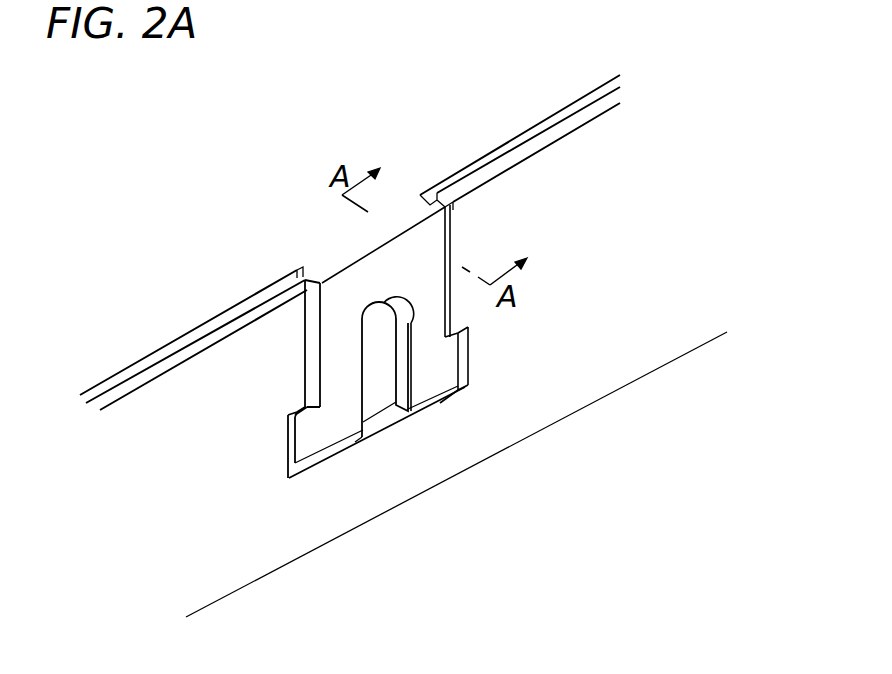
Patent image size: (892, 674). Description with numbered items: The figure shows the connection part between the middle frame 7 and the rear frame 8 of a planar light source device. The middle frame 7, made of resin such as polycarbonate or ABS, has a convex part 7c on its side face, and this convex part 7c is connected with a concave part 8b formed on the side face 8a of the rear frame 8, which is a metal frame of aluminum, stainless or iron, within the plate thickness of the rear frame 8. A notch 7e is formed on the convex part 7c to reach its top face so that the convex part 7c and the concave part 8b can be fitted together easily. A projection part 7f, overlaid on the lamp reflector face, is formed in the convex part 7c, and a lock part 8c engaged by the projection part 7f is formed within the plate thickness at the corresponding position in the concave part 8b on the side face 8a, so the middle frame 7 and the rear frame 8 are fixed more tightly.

The middle frame 7 is at (517, 113).
The convex part 7c is at (337, 293).
The notch 7e is at (383, 342).
The projection part 7f is at (318, 433).
The rear frame 8 is at (645, 273).
The side face 8a is at (233, 540).
The concave part 8b is at (382, 397).
The lock part 8c is at (297, 470).